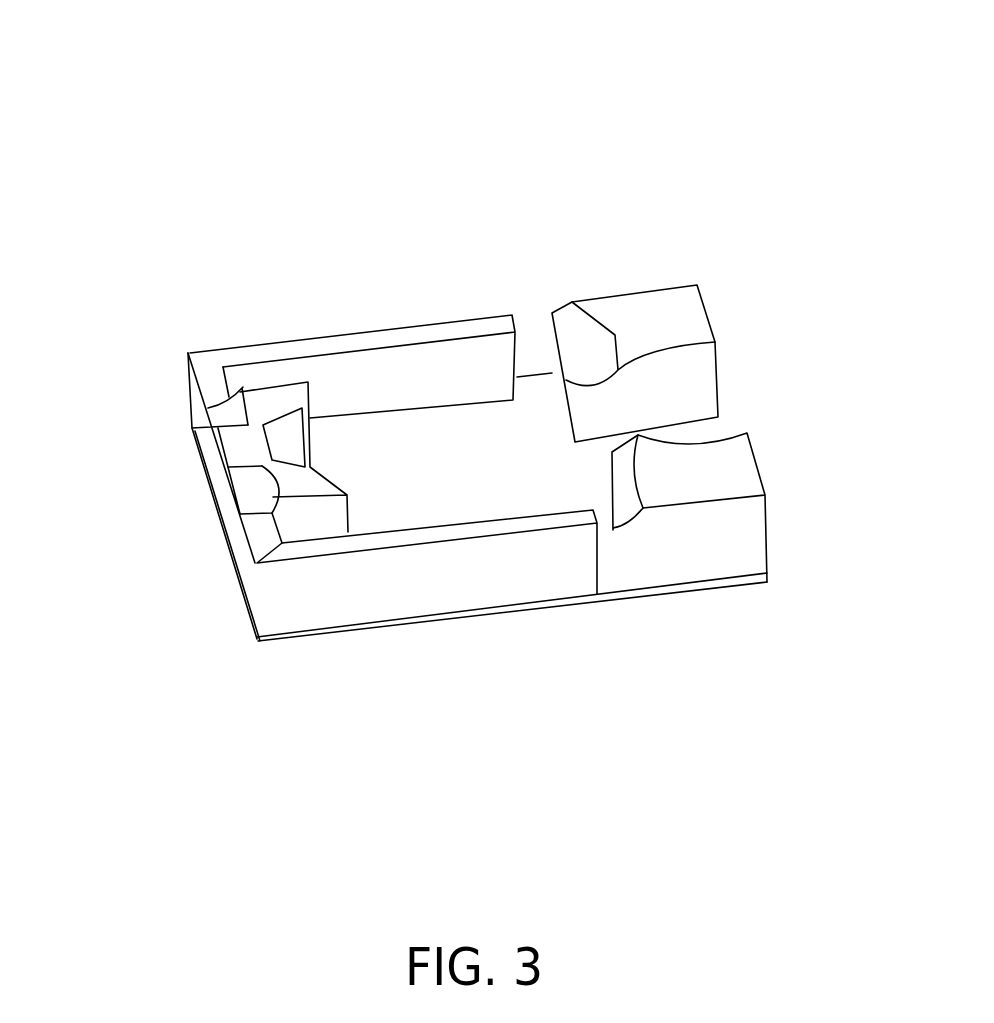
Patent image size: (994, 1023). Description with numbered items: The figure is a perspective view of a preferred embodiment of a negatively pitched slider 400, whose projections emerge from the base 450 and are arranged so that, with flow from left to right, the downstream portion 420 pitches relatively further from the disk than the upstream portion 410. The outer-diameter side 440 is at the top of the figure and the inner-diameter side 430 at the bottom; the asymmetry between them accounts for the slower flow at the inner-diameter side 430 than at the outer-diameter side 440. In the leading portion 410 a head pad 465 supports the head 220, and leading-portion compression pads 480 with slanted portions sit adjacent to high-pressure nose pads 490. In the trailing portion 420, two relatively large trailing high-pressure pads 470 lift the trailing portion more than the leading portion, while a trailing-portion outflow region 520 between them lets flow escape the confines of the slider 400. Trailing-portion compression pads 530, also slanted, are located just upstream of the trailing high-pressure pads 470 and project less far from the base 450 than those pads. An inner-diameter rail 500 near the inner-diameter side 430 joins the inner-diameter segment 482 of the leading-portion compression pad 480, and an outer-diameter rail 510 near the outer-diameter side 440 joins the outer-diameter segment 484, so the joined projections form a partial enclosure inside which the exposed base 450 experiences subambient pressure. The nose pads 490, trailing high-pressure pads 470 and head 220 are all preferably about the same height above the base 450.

The slider 400 is at (320, 86).
The upstream portion 410 is at (155, 718).
The downstream portion 420 is at (815, 620).
The inner-diameter side 430 is at (514, 776).
The outer-diameter side 440 is at (453, 211).
The base 450 is at (447, 588).
The head pad 465 is at (193, 490).
The trailing high-pressure pads 470 is at (705, 401).
The leading-portion compression pads 480 is at (166, 461).
The inner-diameter segment 482 is at (200, 580).
The outer-diameter segment 484 is at (157, 372).
The high-pressure nose pads 490 is at (310, 475).
The head 220 is at (211, 437).
The inner-diameter rail 500 is at (477, 539).
The outer-diameter rail 510 is at (352, 321).
The trailing-portion outflow region 520 is at (809, 348).
The trailing-portion compression pads 530 is at (649, 459).